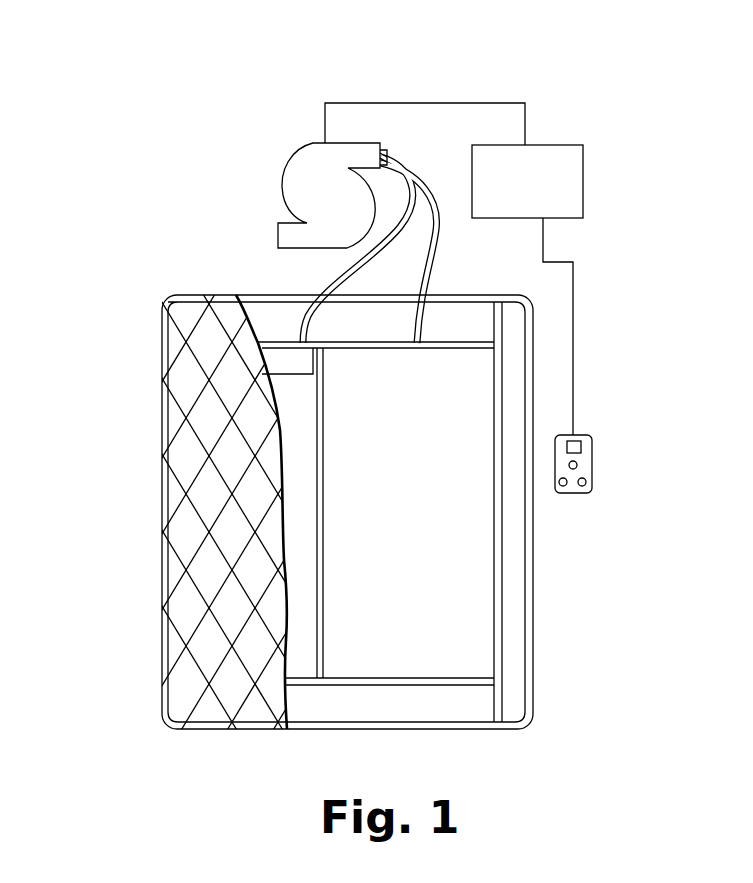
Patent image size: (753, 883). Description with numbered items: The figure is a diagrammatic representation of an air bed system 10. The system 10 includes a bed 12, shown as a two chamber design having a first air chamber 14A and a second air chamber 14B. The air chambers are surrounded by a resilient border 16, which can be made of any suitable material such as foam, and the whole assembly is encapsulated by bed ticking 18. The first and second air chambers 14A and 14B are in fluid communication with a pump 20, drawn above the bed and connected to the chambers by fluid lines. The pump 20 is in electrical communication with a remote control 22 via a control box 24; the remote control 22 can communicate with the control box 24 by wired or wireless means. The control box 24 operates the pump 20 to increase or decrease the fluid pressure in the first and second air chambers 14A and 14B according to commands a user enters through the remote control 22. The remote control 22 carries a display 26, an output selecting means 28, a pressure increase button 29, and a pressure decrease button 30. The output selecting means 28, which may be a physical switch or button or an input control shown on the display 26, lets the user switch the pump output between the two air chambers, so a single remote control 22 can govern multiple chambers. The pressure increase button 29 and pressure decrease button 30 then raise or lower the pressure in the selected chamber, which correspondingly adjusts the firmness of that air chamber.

The air bed system 10 is at (261, 64).
The bed 12 is at (134, 577).
The first air chamber 14A is at (287, 361).
The second air chamber 14B is at (427, 545).
The resilient border 16 is at (512, 583).
The bed ticking 18 is at (183, 520).
The pump 20 is at (291, 171).
The remote control 22 is at (592, 481).
The control box 24 is at (548, 145).
The display 26 is at (583, 447).
The output selecting means 28 is at (583, 466).
The pressure increase button 29 is at (563, 492).
The pressure decrease button 30 is at (588, 491).